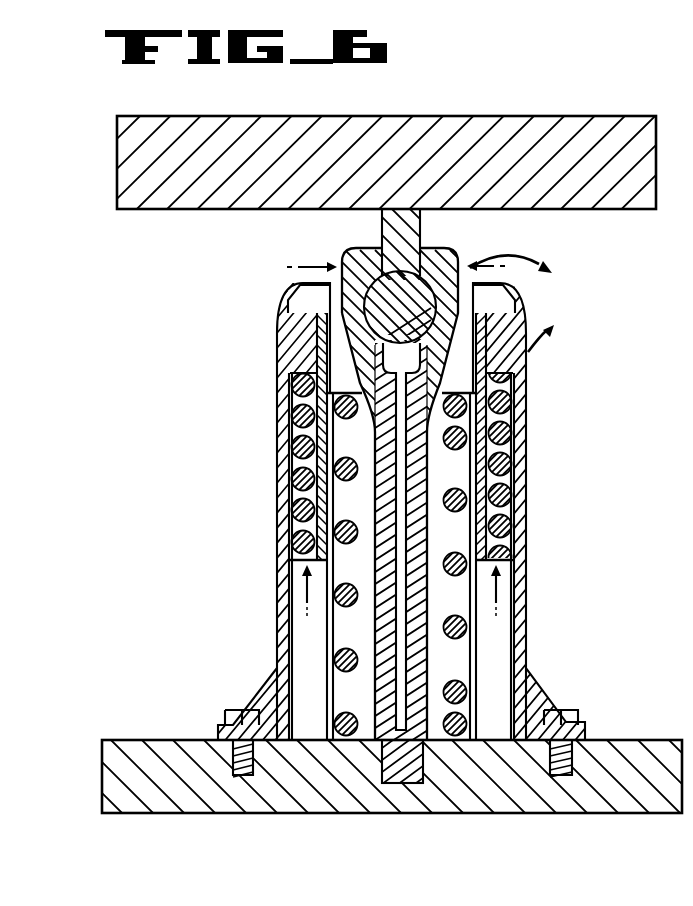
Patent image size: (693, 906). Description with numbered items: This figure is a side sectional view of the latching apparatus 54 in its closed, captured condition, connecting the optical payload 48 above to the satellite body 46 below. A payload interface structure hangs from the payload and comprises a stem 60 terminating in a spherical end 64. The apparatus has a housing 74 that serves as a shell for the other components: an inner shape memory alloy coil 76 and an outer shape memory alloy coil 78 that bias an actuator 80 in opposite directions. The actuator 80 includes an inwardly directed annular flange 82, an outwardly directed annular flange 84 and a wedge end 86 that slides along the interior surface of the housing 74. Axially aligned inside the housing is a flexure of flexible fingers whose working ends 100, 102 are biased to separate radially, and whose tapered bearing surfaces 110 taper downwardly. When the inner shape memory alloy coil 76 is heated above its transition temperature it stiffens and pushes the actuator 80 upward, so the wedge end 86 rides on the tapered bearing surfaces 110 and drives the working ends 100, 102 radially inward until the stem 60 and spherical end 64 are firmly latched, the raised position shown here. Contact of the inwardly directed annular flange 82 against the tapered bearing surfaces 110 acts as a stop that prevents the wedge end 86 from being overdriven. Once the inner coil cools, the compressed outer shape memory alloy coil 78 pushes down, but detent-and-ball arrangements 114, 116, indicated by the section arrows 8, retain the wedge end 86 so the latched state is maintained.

The satellite body 46 is at (365, 814).
The optical payload 48 is at (176, 212).
The latching apparatus 54 is at (120, 332).
The stem 60 is at (422, 230).
The spherical end 64 is at (378, 243).
The housing 74 is at (284, 610).
The inner shape memory alloy coil 76 is at (512, 657).
The outer shape memory alloy coil 78 is at (505, 527).
The actuator 80 is at (276, 498).
The inwardly directed annular flange 82 is at (525, 362).
The outwardly directed annular flange 84 is at (505, 562).
The wedge end 86 is at (275, 329).
The working end 100 is at (443, 253).
The working end 102 is at (352, 258).
The tapered bearing surfaces 110 is at (280, 354).
The detent-and-ball arrangement 114 is at (507, 298).
The detent-and-ball arrangement 116 is at (290, 306).
The section view direction 8 is at (525, 303).